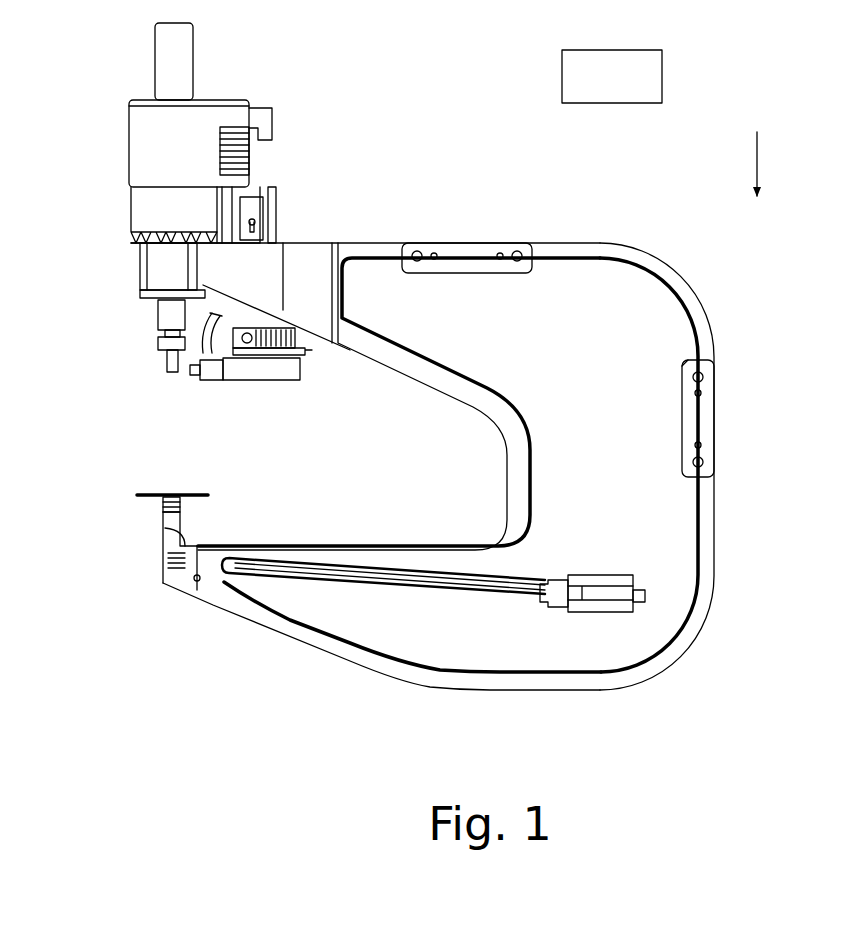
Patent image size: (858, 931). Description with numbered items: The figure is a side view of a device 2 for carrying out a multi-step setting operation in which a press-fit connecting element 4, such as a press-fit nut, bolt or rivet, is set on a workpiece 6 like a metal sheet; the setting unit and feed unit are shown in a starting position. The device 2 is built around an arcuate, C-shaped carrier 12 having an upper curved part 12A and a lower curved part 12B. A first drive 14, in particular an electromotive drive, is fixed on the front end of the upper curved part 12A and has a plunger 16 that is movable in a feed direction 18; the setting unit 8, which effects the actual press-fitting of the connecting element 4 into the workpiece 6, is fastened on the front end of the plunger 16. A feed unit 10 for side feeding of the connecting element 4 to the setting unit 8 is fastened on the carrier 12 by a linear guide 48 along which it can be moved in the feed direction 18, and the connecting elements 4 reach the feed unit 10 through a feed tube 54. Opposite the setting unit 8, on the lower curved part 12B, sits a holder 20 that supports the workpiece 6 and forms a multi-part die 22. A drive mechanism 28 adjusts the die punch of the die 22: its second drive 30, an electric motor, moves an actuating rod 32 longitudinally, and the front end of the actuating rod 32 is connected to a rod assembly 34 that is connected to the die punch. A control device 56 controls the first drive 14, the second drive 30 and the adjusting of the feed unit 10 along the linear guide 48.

The device 2 is at (580, 722).
The connecting element 4 is at (190, 375).
The workpiece 6 is at (170, 493).
The setting unit 8 is at (168, 315).
The feed unit 10 is at (275, 373).
The carrier 12 is at (540, 305).
The upper curved part 12A is at (440, 297).
The lower curved part 12B is at (422, 655).
The first drive 14 is at (155, 138).
The plunger 16 is at (170, 53).
The feed direction 18 is at (757, 163).
The holder 20 is at (102, 540).
The die 22 is at (166, 500).
The drive mechanism 28 is at (376, 583).
The second drive 30 is at (620, 612).
The actuating rod 32 is at (318, 568).
The rod assembly 34 is at (245, 572).
The linear guide 48 is at (277, 213).
The feed tube 54 is at (227, 340).
The control device 56 is at (643, 75).